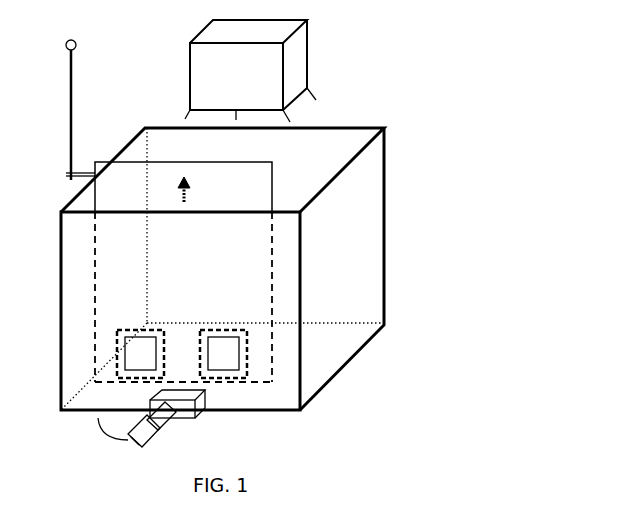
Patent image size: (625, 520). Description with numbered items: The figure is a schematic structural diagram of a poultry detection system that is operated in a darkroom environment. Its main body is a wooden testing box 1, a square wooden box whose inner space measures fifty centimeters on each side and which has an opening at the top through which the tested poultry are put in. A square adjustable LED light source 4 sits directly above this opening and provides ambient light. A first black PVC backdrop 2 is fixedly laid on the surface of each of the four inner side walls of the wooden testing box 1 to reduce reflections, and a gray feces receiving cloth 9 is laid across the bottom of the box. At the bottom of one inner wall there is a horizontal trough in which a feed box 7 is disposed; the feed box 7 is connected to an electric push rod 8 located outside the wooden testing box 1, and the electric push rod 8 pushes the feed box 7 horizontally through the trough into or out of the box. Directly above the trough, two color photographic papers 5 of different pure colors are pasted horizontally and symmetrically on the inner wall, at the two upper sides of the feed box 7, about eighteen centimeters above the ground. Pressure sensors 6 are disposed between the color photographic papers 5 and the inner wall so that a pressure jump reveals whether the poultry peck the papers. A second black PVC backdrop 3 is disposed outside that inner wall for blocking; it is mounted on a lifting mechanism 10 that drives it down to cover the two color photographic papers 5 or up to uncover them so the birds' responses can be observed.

The wooden testing box 1 is at (238, 248).
The first black PVC backdrop 2 is at (185, 140).
The second black PVC backdrop 3 is at (235, 280).
The square adjustable LED light source 4 is at (290, 62).
The color photographic papers 5 is at (213, 330).
The pressure sensor 6 is at (200, 368).
The feed box 7 is at (206, 397).
The electric push rod 8 is at (160, 432).
The feces receiving cloth 9 is at (320, 368).
The lifting mechanism 10 is at (77, 68).